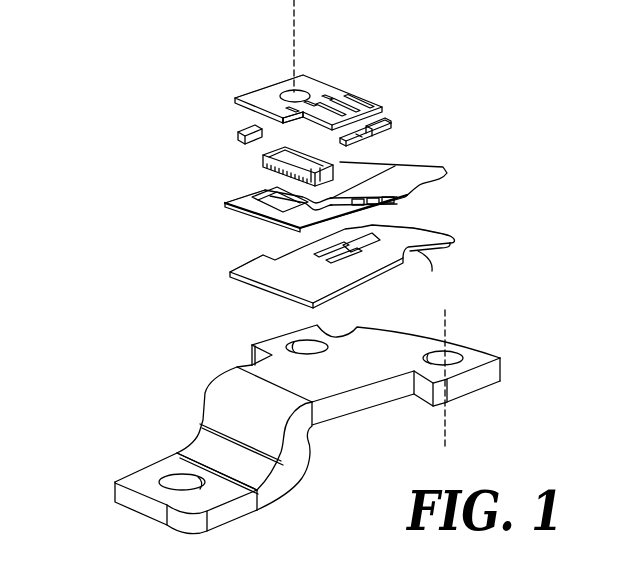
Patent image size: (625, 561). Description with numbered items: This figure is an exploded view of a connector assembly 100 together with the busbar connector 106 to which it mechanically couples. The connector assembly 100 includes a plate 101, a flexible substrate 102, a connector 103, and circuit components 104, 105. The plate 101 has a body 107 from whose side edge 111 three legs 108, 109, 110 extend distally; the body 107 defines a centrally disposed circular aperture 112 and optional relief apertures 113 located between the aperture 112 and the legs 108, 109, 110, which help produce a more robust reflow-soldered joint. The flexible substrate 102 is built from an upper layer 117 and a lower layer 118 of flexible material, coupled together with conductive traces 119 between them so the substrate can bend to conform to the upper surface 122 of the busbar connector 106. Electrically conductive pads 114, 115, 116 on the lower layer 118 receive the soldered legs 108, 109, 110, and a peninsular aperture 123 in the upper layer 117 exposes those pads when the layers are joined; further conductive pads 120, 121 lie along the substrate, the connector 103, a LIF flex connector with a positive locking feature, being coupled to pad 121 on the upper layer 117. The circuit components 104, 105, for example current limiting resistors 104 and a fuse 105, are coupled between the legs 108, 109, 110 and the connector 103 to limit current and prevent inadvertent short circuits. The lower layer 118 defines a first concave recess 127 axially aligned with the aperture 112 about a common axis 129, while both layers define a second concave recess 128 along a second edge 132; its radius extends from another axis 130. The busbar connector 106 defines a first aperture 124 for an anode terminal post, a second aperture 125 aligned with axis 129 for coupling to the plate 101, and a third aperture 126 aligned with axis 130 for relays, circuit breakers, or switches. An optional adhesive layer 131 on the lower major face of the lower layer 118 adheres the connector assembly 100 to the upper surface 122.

The connector assembly 100 is at (112, 262).
The plate 101 is at (234, 98).
The flexible substrate 102 is at (477, 195).
The connector 103 is at (262, 155).
The circuit components 104 is at (355, 136).
The circuit component 105 is at (238, 134).
The busbar connector 106 is at (340, 424).
The body 107 is at (264, 93).
The leg 108 is at (363, 101).
The leg 109 is at (348, 101).
The leg 110 is at (330, 98).
The side edge 111 is at (301, 118).
The aperture 112 is at (297, 89).
The relief apertures 113 is at (266, 117).
The electrically conductive pad 114 is at (378, 251).
The electrically conductive pad 115 is at (450, 238).
The electrically conductive pad 116 is at (327, 261).
The upper layer 117 is at (250, 213).
The lower layer 118 is at (228, 271).
The conductive traces 119 is at (310, 208).
The electrically conductive pad 120 is at (397, 206).
The electrically conductive pad 121 is at (224, 203).
The upper surface 122 is at (374, 368).
The peninsular aperture 123 is at (378, 188).
The first aperture 124 is at (168, 476).
The second aperture 125 is at (251, 360).
The third aperture 126 is at (459, 355).
The first concave recess 127 is at (319, 255).
The second concave recess 128 is at (421, 261).
The axis 129 is at (291, 40).
The axis 130 is at (448, 406).
The adhesive layer 131 is at (268, 293).
The second edge 132 is at (355, 288).